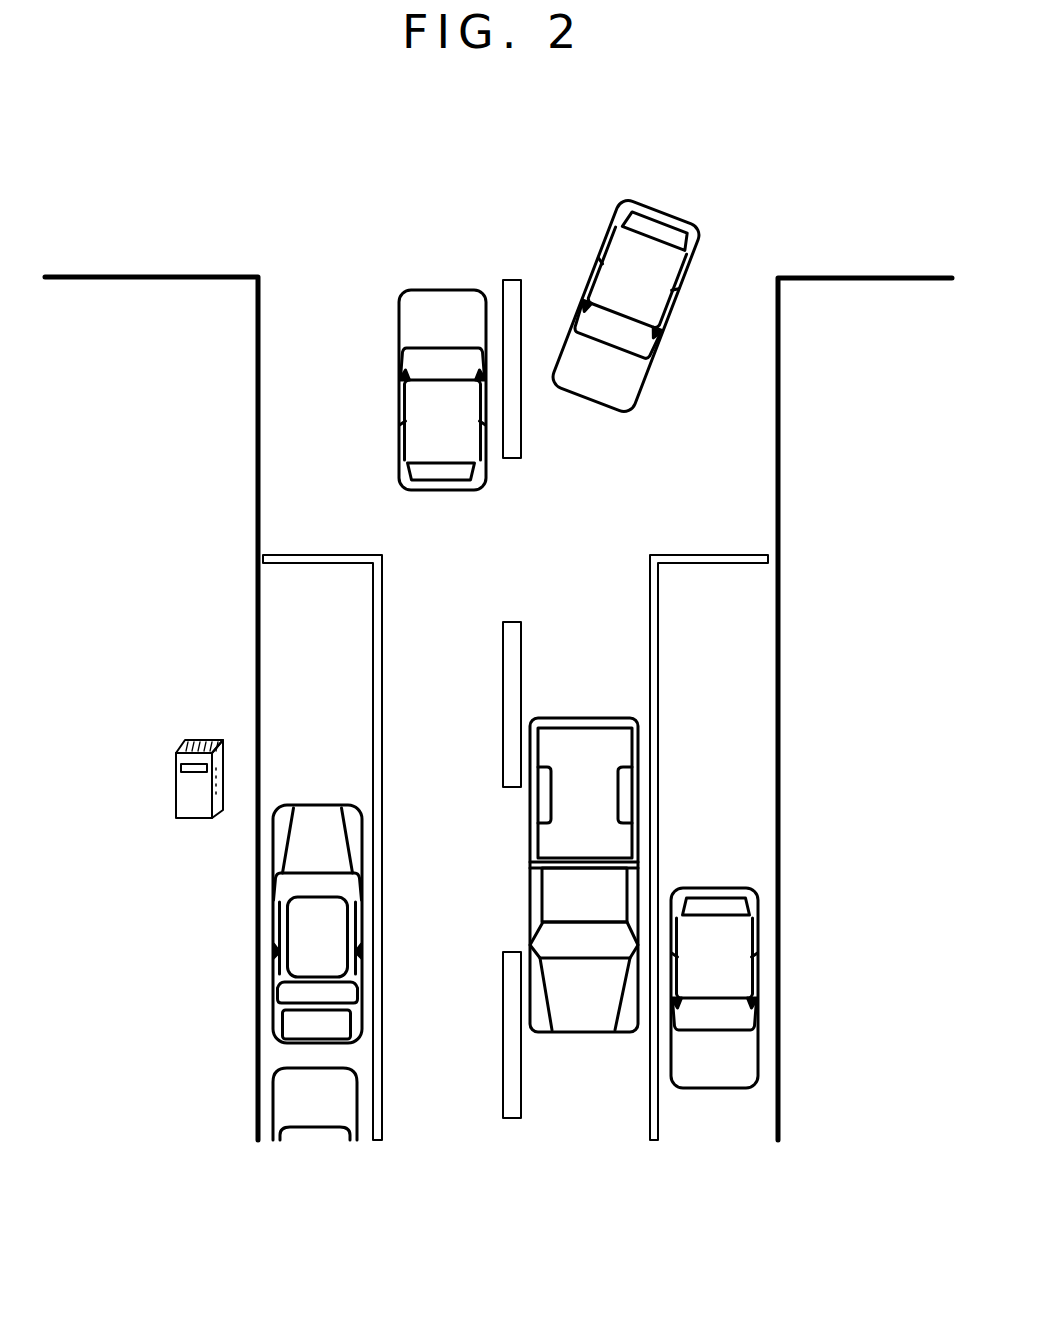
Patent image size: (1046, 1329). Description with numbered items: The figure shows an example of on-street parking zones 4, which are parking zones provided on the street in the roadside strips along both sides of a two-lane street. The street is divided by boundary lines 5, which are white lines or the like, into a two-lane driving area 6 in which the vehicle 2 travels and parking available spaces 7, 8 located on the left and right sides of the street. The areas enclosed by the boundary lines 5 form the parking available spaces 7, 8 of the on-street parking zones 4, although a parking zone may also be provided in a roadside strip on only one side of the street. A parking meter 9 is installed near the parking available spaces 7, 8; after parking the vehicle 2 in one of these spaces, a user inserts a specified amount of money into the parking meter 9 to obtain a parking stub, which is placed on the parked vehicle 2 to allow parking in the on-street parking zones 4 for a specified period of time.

The vehicle 2 is at (312, 937).
The on-street parking zones 4 is at (232, 678).
The boundary lines 5 is at (383, 597).
The two-lane driving area 6 is at (455, 680).
The parking available space 7 is at (330, 643).
The parking available space 8 is at (727, 643).
The parking meter 9 is at (195, 792).